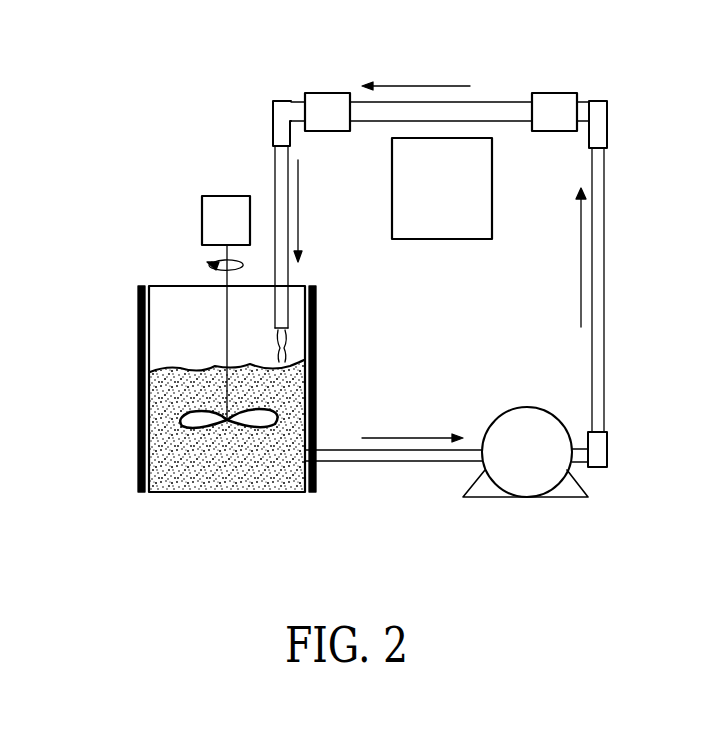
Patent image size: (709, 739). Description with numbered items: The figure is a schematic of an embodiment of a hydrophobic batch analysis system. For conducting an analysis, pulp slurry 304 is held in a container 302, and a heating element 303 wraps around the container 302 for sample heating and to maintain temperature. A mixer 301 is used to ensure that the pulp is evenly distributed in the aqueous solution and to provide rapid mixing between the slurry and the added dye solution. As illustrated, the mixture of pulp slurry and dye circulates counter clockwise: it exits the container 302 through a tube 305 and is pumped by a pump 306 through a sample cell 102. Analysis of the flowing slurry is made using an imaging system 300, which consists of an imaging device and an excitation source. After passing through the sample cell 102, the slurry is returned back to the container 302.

The sample cell 102 is at (503, 92).
The imaging system 300 is at (415, 250).
The mixer 301 is at (216, 182).
The container 302 is at (181, 273).
The heating element 303 is at (136, 272).
The pulp slurry 304 is at (182, 488).
The tube 305 is at (339, 475).
The pump 306 is at (536, 397).